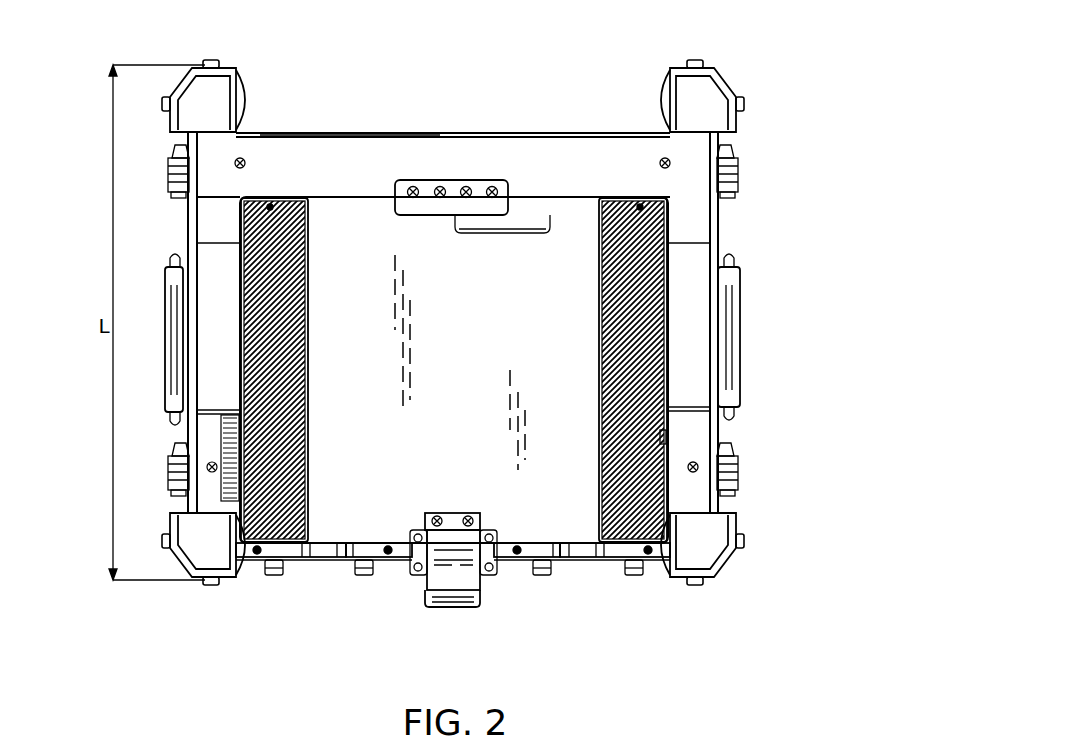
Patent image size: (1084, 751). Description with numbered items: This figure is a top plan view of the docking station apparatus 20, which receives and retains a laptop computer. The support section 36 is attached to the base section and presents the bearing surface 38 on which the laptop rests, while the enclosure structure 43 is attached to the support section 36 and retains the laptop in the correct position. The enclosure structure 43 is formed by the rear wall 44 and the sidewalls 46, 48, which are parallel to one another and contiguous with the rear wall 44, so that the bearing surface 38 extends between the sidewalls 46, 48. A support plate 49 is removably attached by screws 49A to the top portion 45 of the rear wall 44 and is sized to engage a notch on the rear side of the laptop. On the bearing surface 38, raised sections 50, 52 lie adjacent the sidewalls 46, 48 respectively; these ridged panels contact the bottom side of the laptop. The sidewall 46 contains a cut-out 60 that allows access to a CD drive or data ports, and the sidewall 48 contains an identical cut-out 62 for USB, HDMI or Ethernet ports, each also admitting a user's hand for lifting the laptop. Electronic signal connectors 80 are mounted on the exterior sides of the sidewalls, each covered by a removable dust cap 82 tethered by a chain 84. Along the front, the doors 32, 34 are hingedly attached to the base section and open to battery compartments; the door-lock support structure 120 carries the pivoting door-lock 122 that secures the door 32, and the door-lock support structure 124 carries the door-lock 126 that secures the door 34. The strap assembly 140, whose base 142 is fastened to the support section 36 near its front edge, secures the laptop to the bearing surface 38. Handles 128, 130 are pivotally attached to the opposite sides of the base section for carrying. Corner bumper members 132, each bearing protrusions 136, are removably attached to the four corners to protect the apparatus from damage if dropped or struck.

The docking station apparatus 20 is at (902, 40).
The door 32 is at (300, 570).
The door 34 is at (590, 570).
The support section 36 is at (567, 210).
The bearing surface 38 is at (426, 467).
The enclosure structure 43 is at (350, 145).
The rear wall 44 is at (412, 145).
The top portion 45 is at (290, 145).
The sidewall 46 is at (700, 233).
The sidewall 48 is at (195, 208).
The support plate 49 is at (455, 185).
The screws 49A is at (492, 188).
The raised section 50 is at (605, 262).
The raised section 52 is at (310, 275).
The cut-out 60 is at (690, 385).
The cut-out 62 is at (208, 270).
The electronic signal connector 80 is at (178, 194).
The dust cap 82 is at (172, 176).
The chain 84 is at (175, 150).
The door-lock support structure 120 is at (363, 548).
The door-lock 122 is at (272, 578).
The door-lock support structure 124 is at (520, 548).
The door-lock 126 is at (541, 578).
The handle 128 is at (168, 343).
The handle 130 is at (738, 334).
The corner bumper member 132 is at (246, 95).
The protrusions 136 is at (160, 103).
The strap assembly 140 is at (455, 605).
The base 142 is at (418, 578).